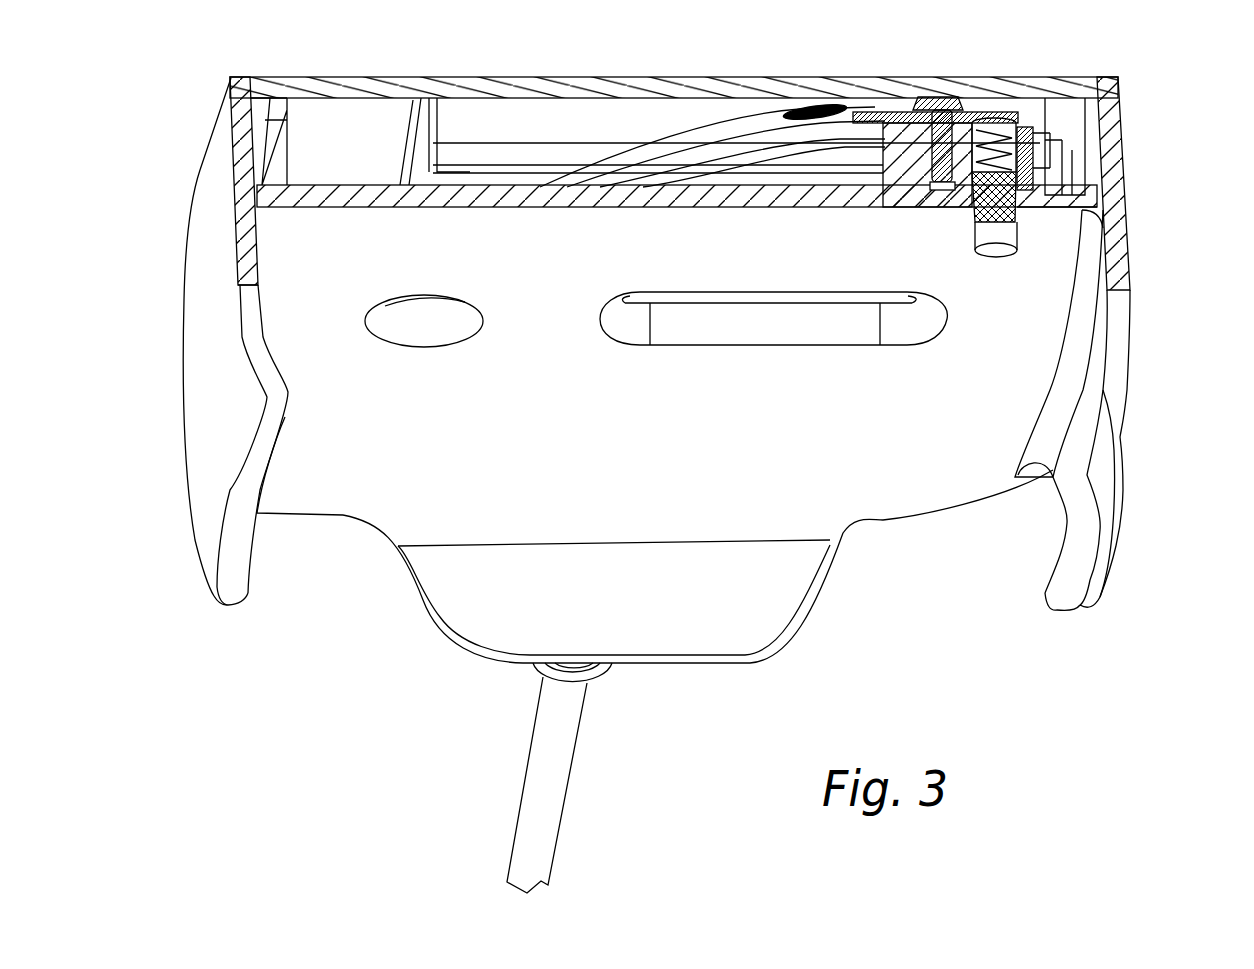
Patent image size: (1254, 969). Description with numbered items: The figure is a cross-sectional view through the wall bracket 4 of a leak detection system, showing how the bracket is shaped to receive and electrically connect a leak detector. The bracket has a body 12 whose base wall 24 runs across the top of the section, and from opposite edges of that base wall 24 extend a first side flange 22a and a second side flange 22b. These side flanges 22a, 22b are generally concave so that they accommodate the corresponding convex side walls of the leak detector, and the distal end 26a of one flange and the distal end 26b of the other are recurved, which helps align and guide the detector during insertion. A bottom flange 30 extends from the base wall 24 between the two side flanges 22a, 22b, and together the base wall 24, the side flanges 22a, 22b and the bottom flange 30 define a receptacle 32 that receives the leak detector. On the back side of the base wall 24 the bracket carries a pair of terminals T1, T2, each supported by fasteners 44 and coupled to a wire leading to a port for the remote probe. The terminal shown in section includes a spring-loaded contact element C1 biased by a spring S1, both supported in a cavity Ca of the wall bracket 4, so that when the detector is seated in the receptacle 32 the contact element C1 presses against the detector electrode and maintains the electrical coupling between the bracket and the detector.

The wall bracket 4 is at (610, 55).
The body 12 is at (203, 140).
The base wall 24 is at (490, 194).
The fasteners 44 is at (918, 98).
The spring S1 is at (990, 135).
The cavity Ca is at (1022, 137).
The spring-loaded contact element C1 is at (1000, 188).
The terminal T1 is at (1020, 215).
The terminal T2 is at (998, 256).
The first side flange 22a is at (221, 401).
The second side flange 22b is at (1103, 385).
The distal end 26a is at (223, 598).
The distal end 26b is at (1078, 597).
The bottom flange 30 is at (752, 628).
The receptacle 32 is at (913, 467).